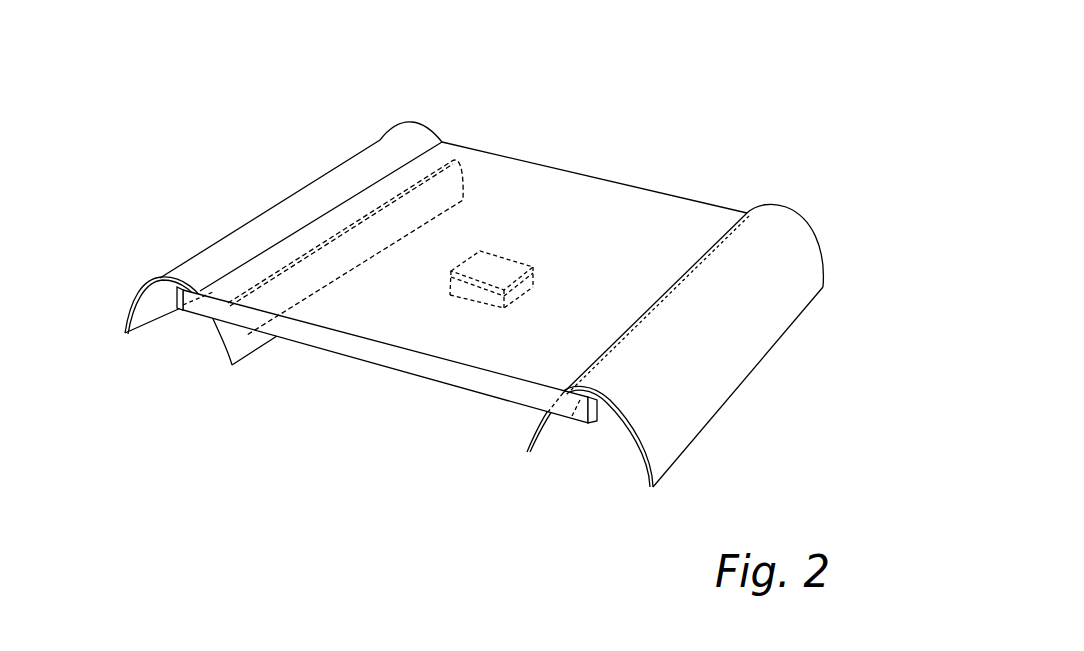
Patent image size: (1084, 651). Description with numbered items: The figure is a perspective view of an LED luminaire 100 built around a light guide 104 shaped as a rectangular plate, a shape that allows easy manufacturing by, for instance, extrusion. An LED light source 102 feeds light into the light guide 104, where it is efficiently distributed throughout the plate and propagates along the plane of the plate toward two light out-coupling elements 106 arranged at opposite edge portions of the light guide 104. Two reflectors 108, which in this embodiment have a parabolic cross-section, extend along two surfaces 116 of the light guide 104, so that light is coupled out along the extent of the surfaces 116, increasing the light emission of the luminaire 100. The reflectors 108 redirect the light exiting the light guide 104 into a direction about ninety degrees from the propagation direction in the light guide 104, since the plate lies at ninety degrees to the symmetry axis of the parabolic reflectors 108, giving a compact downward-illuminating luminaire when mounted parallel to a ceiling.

The LED luminaire 100 is at (733, 101).
The LED light source 102 is at (497, 262).
The light guide 104 is at (483, 173).
The light out-coupling elements 106 is at (175, 297).
The reflectors 108 is at (305, 210).
The surfaces 116 is at (328, 213).